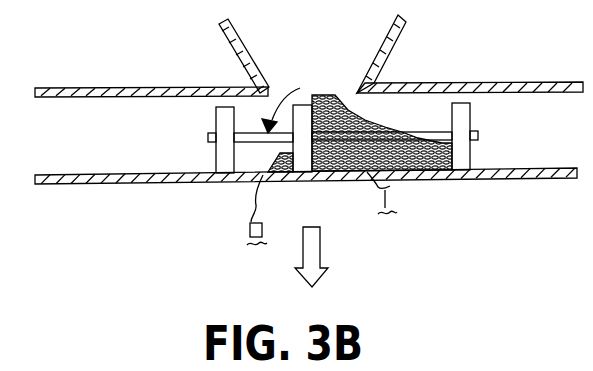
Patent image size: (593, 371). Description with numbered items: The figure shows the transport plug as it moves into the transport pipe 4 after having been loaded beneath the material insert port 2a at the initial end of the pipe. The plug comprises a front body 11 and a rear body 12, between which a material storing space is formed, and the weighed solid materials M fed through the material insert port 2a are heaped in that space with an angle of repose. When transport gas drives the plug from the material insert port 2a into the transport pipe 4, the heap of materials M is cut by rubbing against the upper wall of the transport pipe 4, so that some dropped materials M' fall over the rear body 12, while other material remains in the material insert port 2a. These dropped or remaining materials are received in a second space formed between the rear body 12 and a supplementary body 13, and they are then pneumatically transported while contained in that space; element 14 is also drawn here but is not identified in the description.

The material insert port 2a is at (232, 55).
The transport pipe 4 is at (497, 83).
The front body 11 is at (460, 166).
The rear body 12 is at (308, 162).
The supplementary body 13 is at (218, 164).
The support post 14 is at (250, 133).
The materials M is at (360, 109).
The dropped materials M' is at (204, 191).